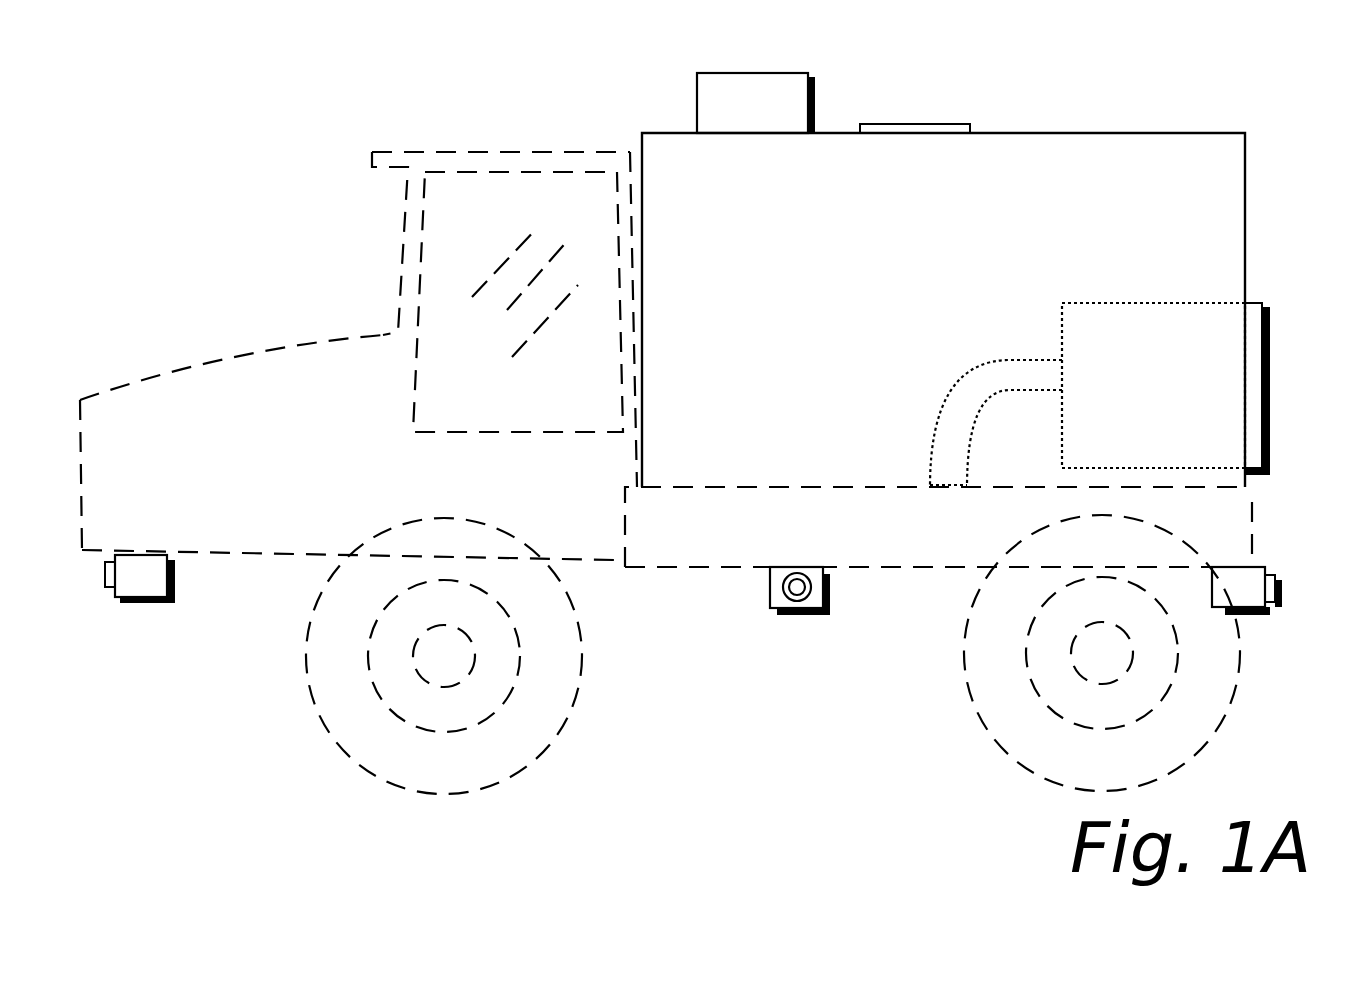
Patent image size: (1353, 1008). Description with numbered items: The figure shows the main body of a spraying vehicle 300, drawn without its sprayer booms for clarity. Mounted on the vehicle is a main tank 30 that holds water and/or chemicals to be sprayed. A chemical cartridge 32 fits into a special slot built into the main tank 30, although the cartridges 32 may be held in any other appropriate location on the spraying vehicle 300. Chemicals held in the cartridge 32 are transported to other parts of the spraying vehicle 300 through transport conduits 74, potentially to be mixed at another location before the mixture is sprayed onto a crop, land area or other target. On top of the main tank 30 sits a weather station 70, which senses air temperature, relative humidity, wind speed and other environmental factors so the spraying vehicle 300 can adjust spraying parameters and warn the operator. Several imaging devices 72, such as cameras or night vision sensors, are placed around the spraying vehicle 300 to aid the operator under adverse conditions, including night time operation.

The spraying vehicle 300 is at (318, 103).
The main tank 30 is at (1245, 157).
The chemical cartridge 32 is at (1270, 378).
The weather station 70 is at (780, 133).
The imaging device 72 is at (160, 603).
The transport conduit 74 is at (961, 385).